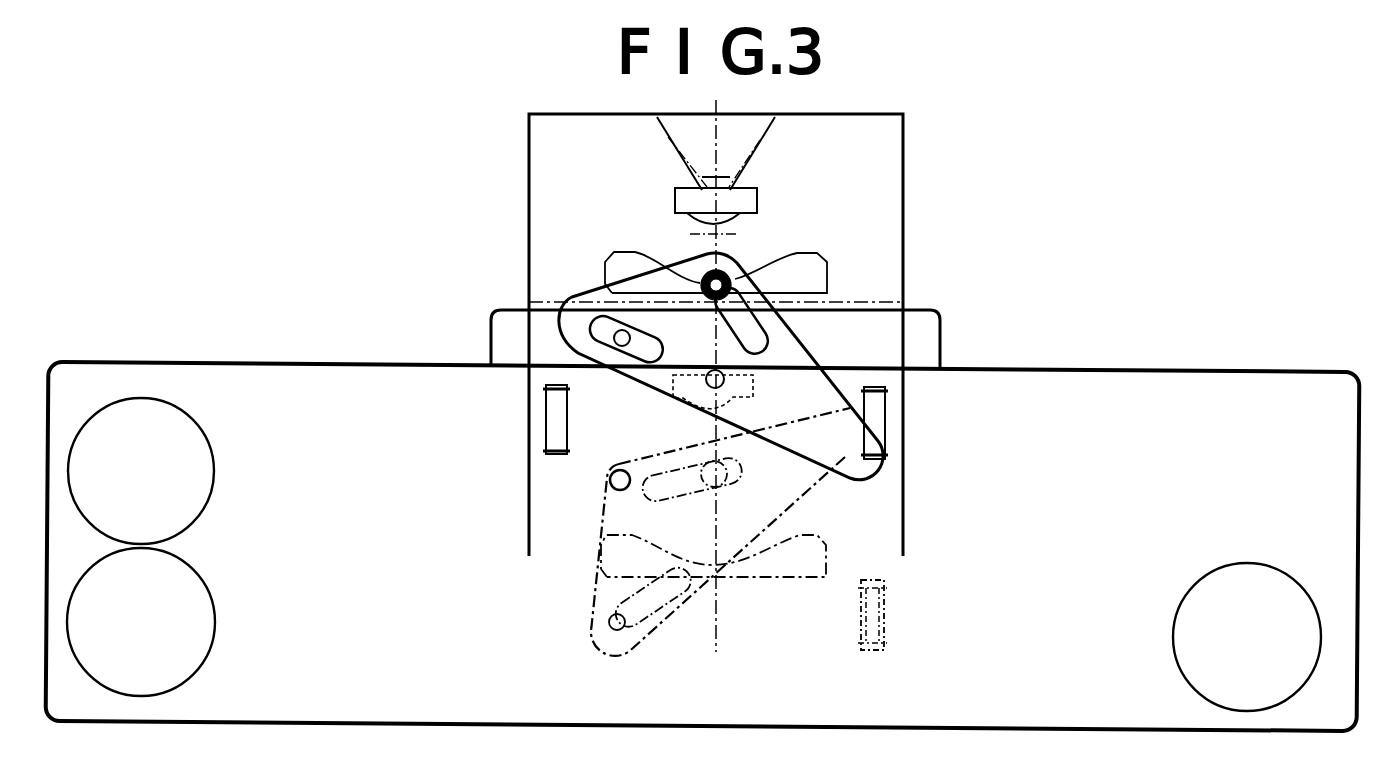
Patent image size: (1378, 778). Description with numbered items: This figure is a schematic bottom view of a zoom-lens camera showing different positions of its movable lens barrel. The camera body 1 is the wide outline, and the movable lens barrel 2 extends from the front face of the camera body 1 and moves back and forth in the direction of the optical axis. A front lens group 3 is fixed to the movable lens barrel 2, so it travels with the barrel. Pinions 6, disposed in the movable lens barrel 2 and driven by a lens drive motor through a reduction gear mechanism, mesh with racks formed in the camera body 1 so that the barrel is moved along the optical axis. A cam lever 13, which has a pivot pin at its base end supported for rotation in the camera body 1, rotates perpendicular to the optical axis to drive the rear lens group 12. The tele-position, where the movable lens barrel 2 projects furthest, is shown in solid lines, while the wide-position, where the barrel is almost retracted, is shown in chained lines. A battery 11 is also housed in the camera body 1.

The camera body 1 is at (1262, 371).
The movable lens barrel 2 is at (531, 146).
The front lens group 3 is at (751, 198).
The pinions 6 is at (541, 438).
The battery 11 is at (203, 470).
The rear lens group 12 is at (816, 261).
The cam lever 13 is at (812, 350).